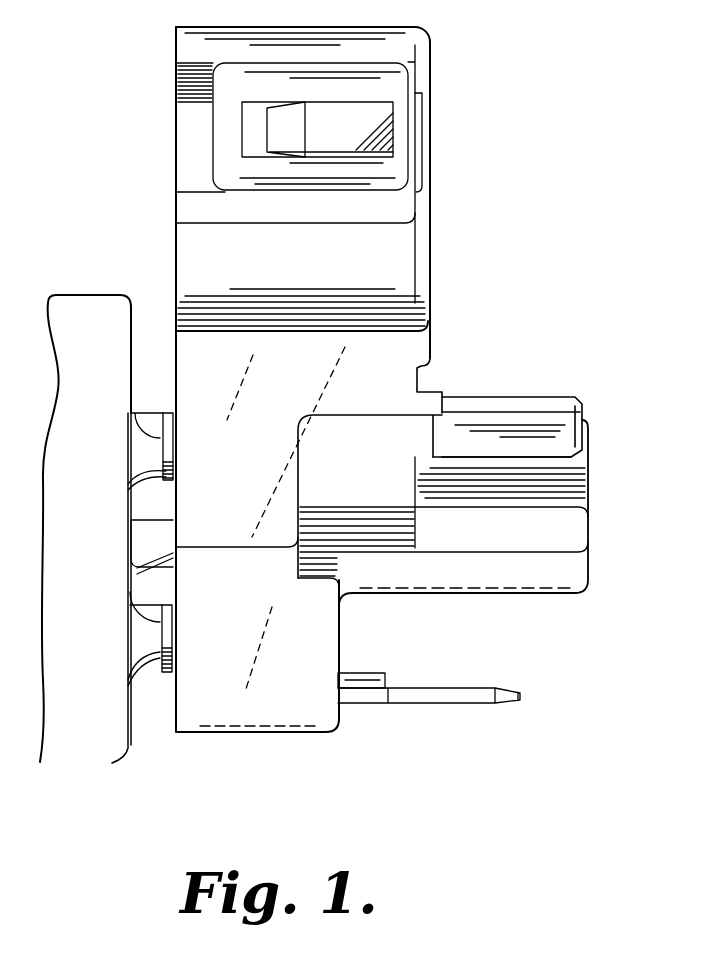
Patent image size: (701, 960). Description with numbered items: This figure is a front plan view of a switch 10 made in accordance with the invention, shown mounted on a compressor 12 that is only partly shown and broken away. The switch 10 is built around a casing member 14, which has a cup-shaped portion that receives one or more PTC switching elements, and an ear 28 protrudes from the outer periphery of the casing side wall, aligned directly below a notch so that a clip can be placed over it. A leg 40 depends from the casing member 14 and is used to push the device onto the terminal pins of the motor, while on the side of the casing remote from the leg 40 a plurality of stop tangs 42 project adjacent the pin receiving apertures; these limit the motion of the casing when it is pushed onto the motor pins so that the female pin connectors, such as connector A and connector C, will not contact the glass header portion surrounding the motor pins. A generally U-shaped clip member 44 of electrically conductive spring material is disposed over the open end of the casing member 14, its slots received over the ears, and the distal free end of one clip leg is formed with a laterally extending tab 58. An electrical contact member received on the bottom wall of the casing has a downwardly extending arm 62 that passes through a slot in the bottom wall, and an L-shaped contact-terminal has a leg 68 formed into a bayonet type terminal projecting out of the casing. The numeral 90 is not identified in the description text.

The switch 10 is at (474, 248).
The compressor 12 is at (103, 322).
The casing member 14 is at (426, 331).
The ear 28 is at (322, 141).
The leg 40 is at (584, 578).
The stop tangs 42 is at (140, 552).
The clip member 44 is at (209, 138).
The tab 58 is at (414, 93).
The arm 62 is at (421, 136).
The leg 68 is at (555, 421).
The lower latch arm 90 is at (140, 668).
The female pin connector A is at (452, 697).
The female pin connector C is at (168, 412).